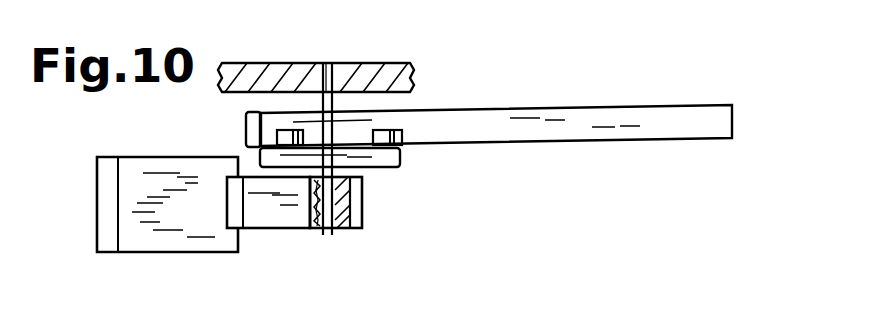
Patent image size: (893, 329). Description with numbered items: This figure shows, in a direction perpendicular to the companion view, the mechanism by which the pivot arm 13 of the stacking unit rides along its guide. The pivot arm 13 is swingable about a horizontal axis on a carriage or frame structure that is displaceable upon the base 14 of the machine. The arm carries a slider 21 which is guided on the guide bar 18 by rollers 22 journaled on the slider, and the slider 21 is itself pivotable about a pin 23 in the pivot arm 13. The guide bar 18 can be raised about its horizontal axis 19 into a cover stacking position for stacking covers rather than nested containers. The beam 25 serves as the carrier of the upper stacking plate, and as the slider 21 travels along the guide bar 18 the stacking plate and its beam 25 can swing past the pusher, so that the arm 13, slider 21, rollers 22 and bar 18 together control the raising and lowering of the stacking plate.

The pivot arm 13 is at (272, 212).
The base 14 is at (18, 0).
The guide bar 18 is at (592, 127).
The horizontal axis 19 is at (329, 63).
The slider 21 is at (370, 167).
The rollers 22 is at (393, 127).
The pin 23 is at (327, 228).
The beam 25 is at (172, 228).